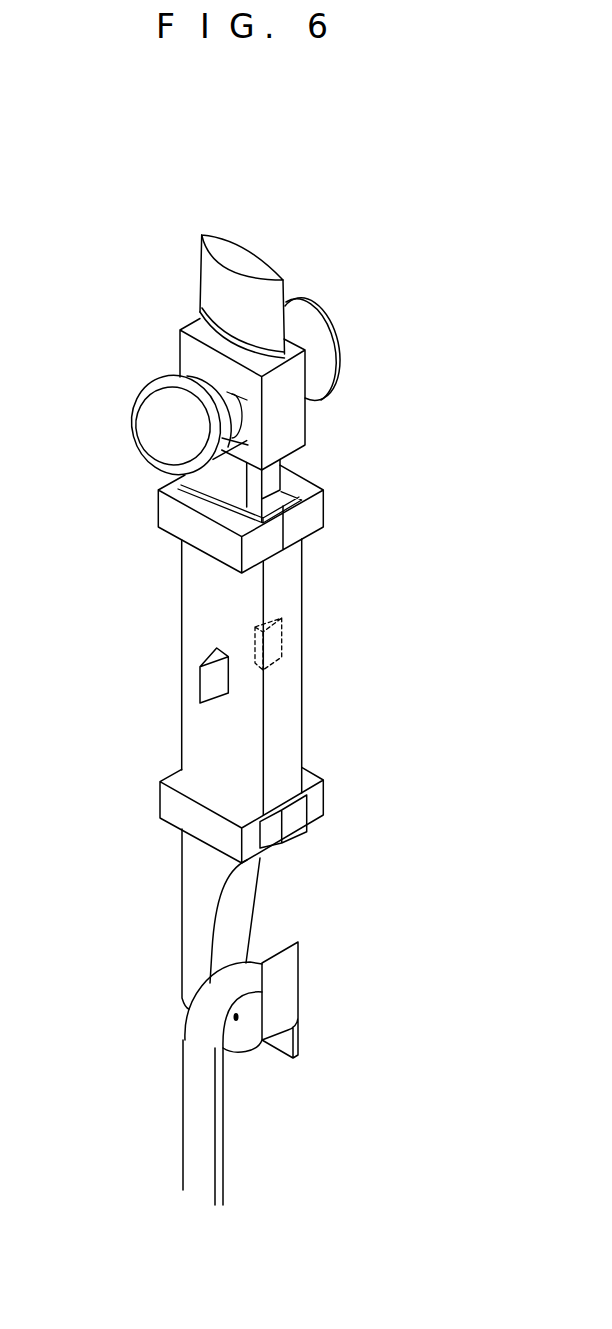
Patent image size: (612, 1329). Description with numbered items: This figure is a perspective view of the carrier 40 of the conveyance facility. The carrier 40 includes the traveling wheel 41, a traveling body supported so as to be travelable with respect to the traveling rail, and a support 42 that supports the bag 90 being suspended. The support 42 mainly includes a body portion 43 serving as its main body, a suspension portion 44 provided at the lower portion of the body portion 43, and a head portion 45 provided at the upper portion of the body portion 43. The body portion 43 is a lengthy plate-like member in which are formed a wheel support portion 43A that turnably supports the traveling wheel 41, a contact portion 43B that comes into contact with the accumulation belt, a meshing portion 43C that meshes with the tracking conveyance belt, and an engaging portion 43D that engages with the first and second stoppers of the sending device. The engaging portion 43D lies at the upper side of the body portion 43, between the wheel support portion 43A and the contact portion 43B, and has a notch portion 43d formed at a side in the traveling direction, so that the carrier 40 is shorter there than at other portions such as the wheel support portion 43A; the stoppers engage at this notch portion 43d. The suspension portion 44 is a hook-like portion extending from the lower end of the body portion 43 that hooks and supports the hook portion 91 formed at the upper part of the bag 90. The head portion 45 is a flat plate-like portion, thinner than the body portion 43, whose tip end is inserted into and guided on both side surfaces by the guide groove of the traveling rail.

The carrier 40 is at (198, 203).
The traveling wheel 41 is at (220, 413).
The support 42 is at (227, 618).
The body portion 43 is at (197, 605).
The wheel support portion 43A is at (183, 352).
The contact portion 43B is at (198, 507).
The meshing portion 43C is at (287, 632).
The engaging portion 43D is at (227, 472).
The notch portion 43d is at (272, 480).
The suspension portion 44 is at (195, 902).
The head portion 45 is at (252, 263).
The bag 90 is at (265, 1083).
The hook portion 91 is at (212, 1137).